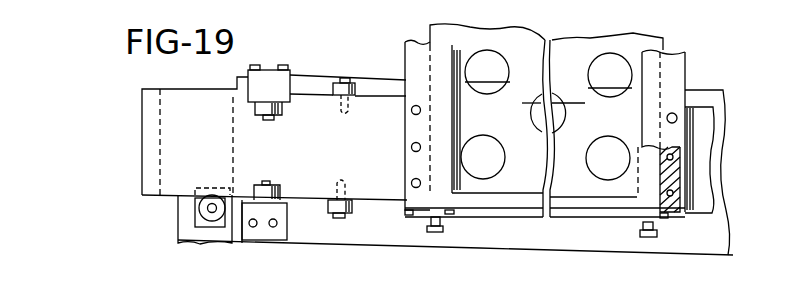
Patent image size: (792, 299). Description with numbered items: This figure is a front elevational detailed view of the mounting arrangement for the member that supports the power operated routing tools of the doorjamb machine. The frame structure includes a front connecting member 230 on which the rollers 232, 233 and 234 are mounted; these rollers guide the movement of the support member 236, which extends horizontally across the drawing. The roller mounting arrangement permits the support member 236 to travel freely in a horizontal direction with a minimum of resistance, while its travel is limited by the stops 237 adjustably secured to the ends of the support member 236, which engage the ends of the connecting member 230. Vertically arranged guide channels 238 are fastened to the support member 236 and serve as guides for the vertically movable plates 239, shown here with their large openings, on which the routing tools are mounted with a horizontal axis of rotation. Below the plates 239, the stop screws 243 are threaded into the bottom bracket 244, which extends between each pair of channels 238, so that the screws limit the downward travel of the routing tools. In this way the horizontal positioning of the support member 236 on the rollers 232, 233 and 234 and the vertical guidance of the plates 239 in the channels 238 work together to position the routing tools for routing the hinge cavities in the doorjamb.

The front connecting member 230 is at (723, 168).
The roller 232 is at (283, 113).
The roller 233 is at (367, 96).
The roller 234 is at (198, 213).
The support member 236 is at (170, 132).
The stop 237 is at (148, 160).
The guide channel 238 is at (417, 53).
The vertically movable plate 239 is at (577, 47).
The stop screw 243 is at (445, 228).
The bottom bracket 244 is at (557, 212).